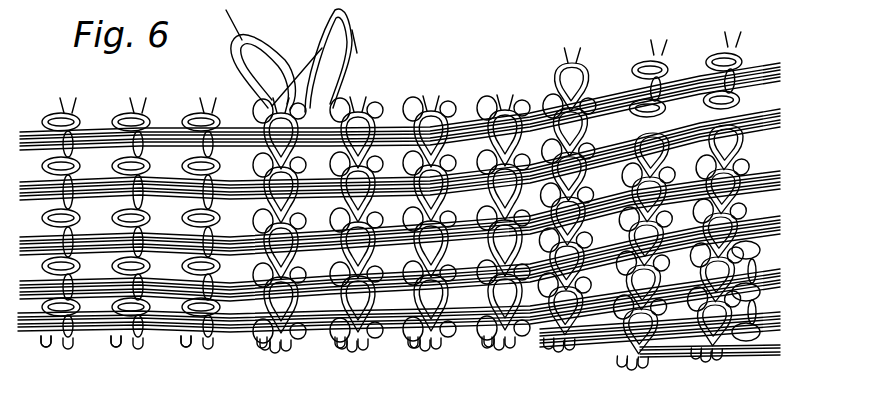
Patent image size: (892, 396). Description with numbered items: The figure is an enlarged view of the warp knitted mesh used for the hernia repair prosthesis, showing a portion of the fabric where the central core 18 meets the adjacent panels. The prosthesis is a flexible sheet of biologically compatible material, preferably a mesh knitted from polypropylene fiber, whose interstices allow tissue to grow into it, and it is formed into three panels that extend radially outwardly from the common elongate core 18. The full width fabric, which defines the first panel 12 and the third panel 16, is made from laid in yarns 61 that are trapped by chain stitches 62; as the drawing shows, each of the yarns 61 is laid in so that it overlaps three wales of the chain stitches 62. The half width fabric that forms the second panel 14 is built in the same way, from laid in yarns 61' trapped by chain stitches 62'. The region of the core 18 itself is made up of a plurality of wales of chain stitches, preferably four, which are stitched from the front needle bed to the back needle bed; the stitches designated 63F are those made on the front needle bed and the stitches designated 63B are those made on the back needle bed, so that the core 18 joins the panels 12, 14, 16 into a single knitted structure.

The first panel 12 is at (757, 60).
The second panel 14 is at (748, 345).
The third panel 16 is at (107, 335).
The central junction or core 18 is at (240, 360).
The laid in yarns 61 is at (397, 199).
The chain stitches 62 is at (381, 186).
The laid in yarns 61' is at (701, 213).
The chain stitches 62' is at (609, 205).
The chain stitches made on the back needle bed 63B is at (310, 80).
The chain stitches made on the front needle bed 63F is at (236, 57).